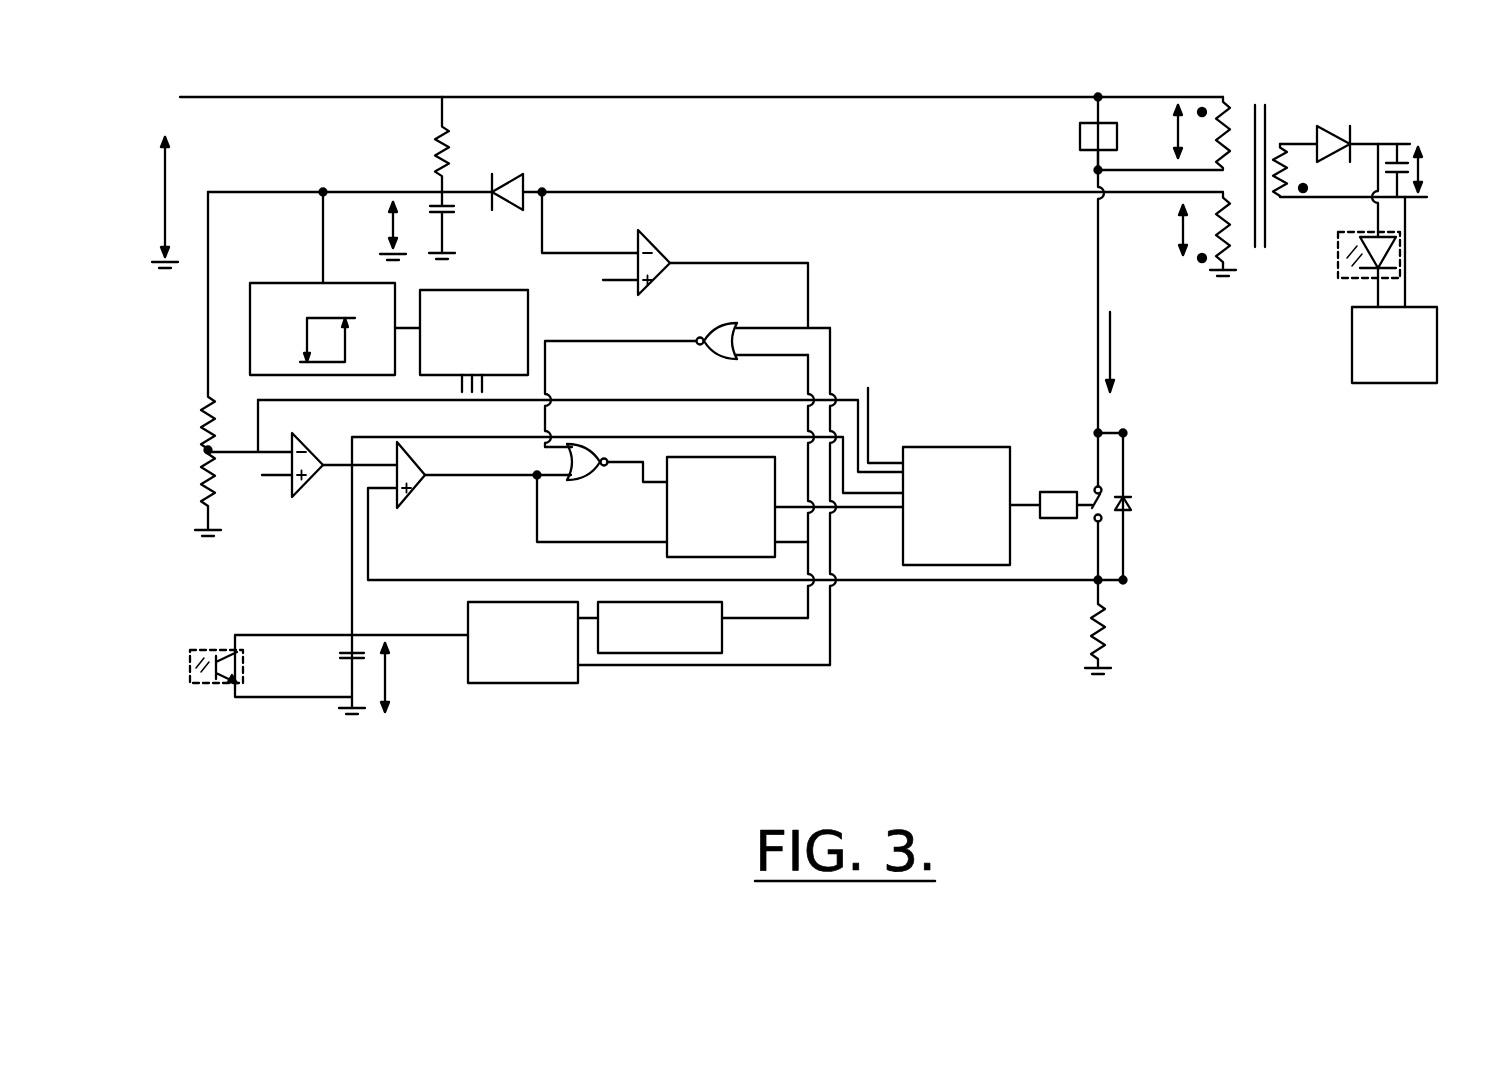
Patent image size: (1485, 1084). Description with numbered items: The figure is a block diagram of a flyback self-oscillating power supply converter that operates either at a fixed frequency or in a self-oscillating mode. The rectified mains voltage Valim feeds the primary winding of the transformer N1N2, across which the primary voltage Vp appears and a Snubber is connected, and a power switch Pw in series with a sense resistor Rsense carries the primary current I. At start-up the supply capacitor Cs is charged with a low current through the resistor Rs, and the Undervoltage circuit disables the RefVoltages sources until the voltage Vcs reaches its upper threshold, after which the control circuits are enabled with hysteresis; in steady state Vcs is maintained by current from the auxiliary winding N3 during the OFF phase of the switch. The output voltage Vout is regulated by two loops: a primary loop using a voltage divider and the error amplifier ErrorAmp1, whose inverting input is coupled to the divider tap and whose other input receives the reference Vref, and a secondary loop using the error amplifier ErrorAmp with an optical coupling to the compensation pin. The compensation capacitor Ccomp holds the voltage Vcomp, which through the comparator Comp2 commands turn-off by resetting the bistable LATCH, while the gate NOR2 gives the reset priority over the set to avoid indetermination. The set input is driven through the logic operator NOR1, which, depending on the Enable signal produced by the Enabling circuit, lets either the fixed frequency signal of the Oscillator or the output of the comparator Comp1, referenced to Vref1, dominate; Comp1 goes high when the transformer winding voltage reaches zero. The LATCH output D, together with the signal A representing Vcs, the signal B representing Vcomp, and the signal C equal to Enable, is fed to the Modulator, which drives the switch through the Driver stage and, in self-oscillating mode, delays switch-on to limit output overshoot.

The VALIM supply voltage Valim is at (204, 202).
The resistor Rs is at (461, 144).
The supply capacitor Cs is at (459, 225).
The Vcs voltage Vcs is at (370, 231).
The reference voltage Vref is at (234, 464).
The UNDERVOLTAGE circuit Undervoltage is at (335, 283).
The REF. VOLTAGES circuit RefVoltages is at (474, 341).
The error amplifier ERROR AMP1 ErrorAmp1 is at (302, 494).
The signal A is at (580, 421).
The signal B is at (627, 528).
The comparator COMP2 Comp2 is at (517, 511).
The logic gate NOR2 is at (606, 487).
The bistable circuit LATCH is at (737, 508).
The D signal D is at (839, 491).
The logic operator NOR1 is at (687, 385).
The comparator COMP1 Comp1 is at (675, 260).
The reference voltage Vref1 is at (584, 282).
The C signal C is at (775, 642).
The ENABLE signal Enable is at (704, 683).
The MODULATOR circuit Modulator is at (954, 474).
The DRIVER stage Driver is at (1055, 489).
The power switch Pw is at (1089, 502).
The primary current I is at (1119, 352).
The sense resistor Rsense is at (1149, 637).
The snubber Snubber is at (1086, 146).
The transformer windings N1:N2 N1N2 is at (1246, 154).
The primary voltage Vp is at (1160, 131).
The auxiliary winding AUS N3 is at (1202, 238).
The output voltage Vout is at (1382, 161).
The error amplifier ERROR AMP ErrorAmp is at (1387, 307).
The CCOMP compensation capacitor Ccomp is at (329, 674).
The VCOMP voltage Vcomp is at (410, 677).
The ENABLING circuit Enabling is at (533, 642).
The OSCILLATOR circuit Oscillator is at (660, 627).